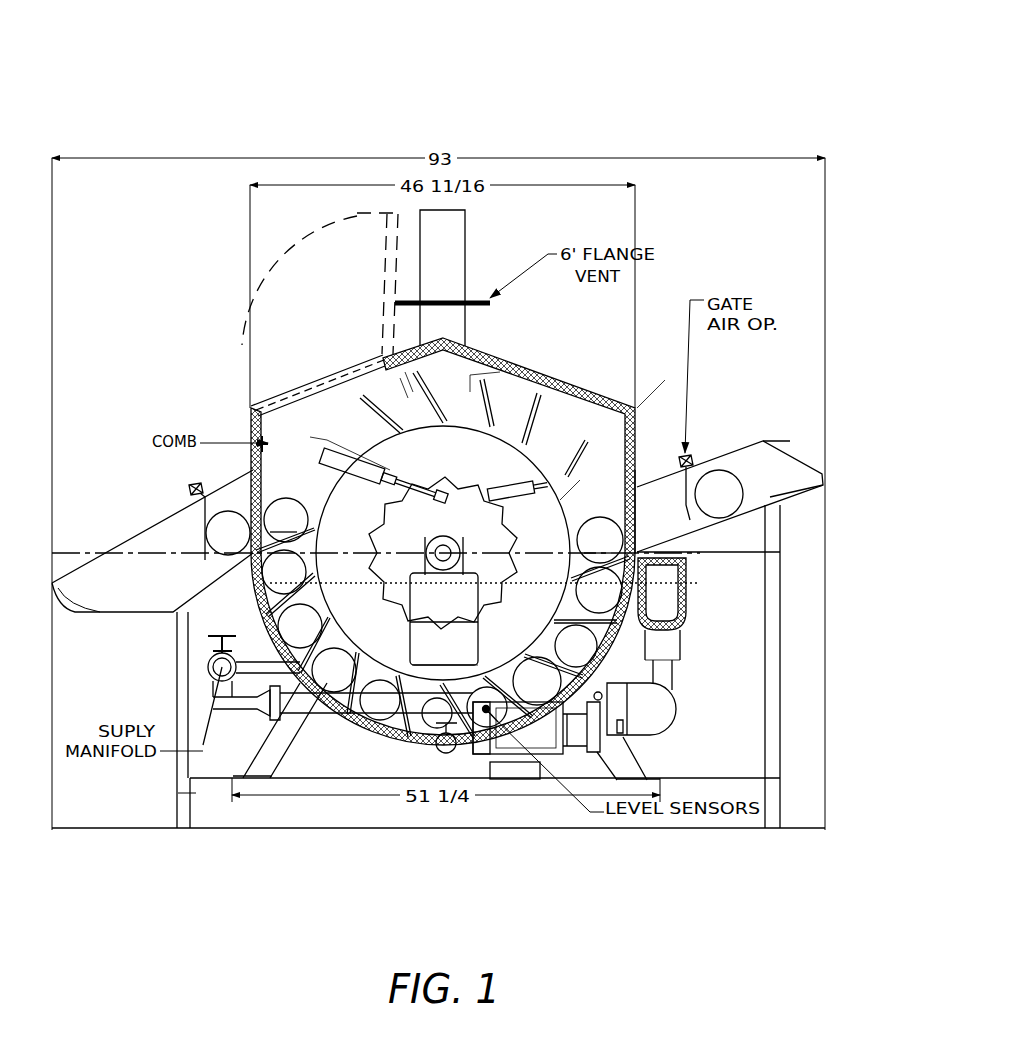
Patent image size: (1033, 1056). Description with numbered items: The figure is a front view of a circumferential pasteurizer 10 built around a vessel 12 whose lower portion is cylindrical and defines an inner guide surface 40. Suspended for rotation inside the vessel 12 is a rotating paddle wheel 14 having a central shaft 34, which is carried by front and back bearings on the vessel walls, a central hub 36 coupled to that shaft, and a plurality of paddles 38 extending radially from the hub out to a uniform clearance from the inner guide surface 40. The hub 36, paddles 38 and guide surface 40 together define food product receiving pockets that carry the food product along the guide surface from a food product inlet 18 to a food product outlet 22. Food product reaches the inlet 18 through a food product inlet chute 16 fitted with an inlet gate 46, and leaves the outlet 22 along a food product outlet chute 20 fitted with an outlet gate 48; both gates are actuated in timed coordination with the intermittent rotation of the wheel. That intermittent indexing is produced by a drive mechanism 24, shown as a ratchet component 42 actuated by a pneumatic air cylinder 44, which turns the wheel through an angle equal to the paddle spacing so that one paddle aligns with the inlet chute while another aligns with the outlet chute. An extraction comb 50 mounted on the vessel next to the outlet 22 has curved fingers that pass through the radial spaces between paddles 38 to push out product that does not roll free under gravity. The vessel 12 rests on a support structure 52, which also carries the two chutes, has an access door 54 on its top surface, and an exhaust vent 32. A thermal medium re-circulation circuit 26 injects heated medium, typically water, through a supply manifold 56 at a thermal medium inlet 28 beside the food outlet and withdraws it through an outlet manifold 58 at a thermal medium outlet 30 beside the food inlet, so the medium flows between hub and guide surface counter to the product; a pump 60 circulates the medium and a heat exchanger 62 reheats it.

The circumferential pasteurizer 10 is at (600, 68).
The vessel 12 is at (498, 358).
The rotating paddle wheel 14 is at (352, 418).
The food product inlet chute 16 is at (758, 442).
The food product inlet 18 is at (652, 504).
The food product outlet chute 20 is at (137, 528).
The food product outlet 22 is at (242, 495).
The drive mechanism 24 is at (293, 445).
The thermal medium re-circulation circuit 26 is at (690, 719).
The thermal medium inlet 28 is at (270, 656).
The thermal medium outlet 30 is at (658, 578).
The exhaust vent 32 is at (455, 263).
The central shaft 34 is at (443, 545).
The central hub 36 is at (537, 630).
The paddles 38 is at (545, 425).
The inner guide surface 40 is at (383, 712).
The ratchet component 42 is at (422, 541).
The pneumatic air cylinder 44 is at (343, 473).
The inlet gate 46 is at (692, 466).
The outlet gate 48 is at (201, 517).
The extraction comb 50 is at (275, 443).
The support structure 52 is at (287, 758).
The access door 54 is at (380, 272).
The supply manifold 56 is at (288, 722).
The outlet manifold 58 is at (685, 612).
The pump 60 is at (597, 700).
The heat exchanger 62 is at (622, 678).